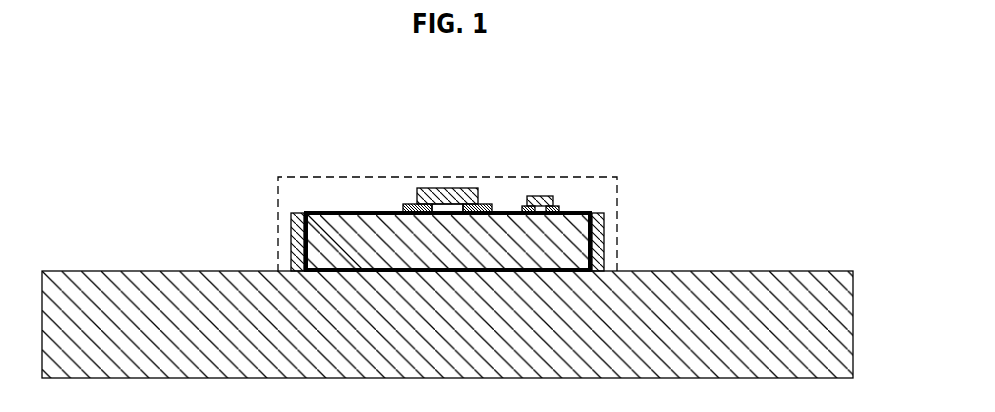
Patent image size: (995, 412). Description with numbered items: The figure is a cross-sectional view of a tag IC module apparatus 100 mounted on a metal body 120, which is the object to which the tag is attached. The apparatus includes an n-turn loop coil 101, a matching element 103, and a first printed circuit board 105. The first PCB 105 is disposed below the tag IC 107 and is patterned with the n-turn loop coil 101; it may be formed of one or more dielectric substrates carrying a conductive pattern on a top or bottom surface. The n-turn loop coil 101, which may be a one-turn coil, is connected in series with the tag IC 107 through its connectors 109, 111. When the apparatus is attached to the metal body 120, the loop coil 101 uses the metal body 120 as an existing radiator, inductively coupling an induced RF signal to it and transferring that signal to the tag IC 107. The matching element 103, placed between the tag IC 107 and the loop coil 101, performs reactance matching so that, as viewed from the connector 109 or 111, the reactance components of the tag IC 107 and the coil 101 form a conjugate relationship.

The tag IC module apparatus 100 is at (632, 162).
The n-turn loop coil 101 is at (330, 211).
The matching element 103 is at (542, 196).
The first printed circuit board 105 is at (604, 238).
The tag IC 107 is at (448, 188).
The connector 109 is at (410, 204).
The connector 111 is at (490, 204).
The metal body 120 is at (160, 271).